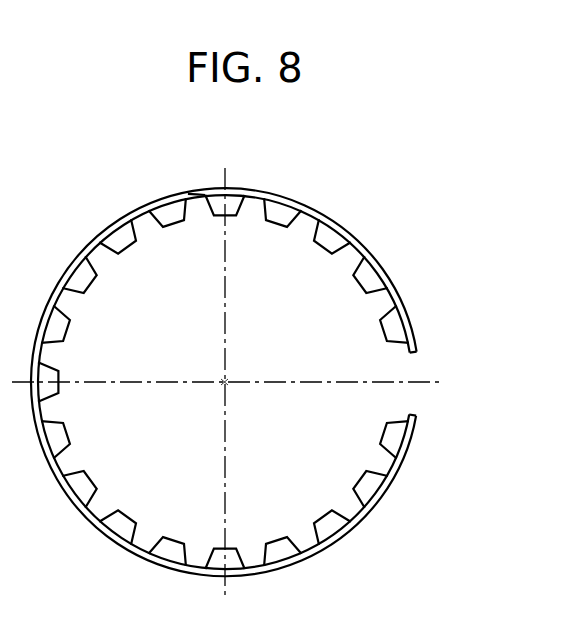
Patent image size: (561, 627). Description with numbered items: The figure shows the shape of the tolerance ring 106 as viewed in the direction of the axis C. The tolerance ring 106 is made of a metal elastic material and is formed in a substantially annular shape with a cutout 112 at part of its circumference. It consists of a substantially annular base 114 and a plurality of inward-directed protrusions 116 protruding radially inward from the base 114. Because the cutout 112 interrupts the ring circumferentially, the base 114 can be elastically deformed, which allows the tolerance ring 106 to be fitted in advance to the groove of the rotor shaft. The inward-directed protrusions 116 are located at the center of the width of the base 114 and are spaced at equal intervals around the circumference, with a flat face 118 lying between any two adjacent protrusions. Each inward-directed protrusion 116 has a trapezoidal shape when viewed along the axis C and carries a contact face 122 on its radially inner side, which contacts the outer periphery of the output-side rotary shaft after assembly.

The tolerance ring 106 is at (410, 226).
The cutout 112 is at (415, 356).
The base 114 is at (317, 213).
The inward-directed protrusions 116 is at (282, 214).
The flat face 118 is at (202, 198).
The contact face 122 is at (383, 333).
The axis C is at (224, 382).